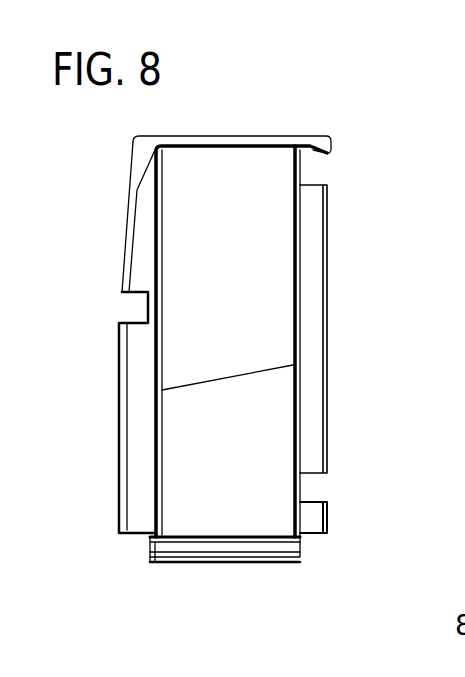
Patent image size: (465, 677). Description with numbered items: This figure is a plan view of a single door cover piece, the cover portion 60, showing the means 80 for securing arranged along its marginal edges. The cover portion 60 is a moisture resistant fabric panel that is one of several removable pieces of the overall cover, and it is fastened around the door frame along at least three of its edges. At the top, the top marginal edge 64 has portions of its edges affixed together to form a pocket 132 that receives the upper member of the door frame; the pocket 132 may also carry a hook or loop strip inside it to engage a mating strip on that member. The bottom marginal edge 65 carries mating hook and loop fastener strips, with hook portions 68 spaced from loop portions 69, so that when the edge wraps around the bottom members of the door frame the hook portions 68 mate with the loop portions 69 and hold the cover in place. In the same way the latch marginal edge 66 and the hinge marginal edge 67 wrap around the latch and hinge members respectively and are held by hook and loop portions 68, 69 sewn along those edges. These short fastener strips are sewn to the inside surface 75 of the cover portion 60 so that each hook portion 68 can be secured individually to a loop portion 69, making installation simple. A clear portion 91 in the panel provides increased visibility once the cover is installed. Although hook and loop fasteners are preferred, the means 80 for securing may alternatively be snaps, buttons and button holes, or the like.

The top marginal edge 64 is at (233, 137).
The loop portions 69 is at (318, 152).
The hook portions 68 is at (137, 232).
The latch marginal edge 66 is at (328, 345).
The hinge marginal edge 67 is at (120, 448).
The cover portion 60 is at (195, 542).
The bottom marginal edge 65 is at (225, 555).
The clear portion 91 is at (216, 288).
The inside surface 75 is at (218, 492).
The pocket 132 is at (203, 143).
The means for securing 80 is at (377, 558).